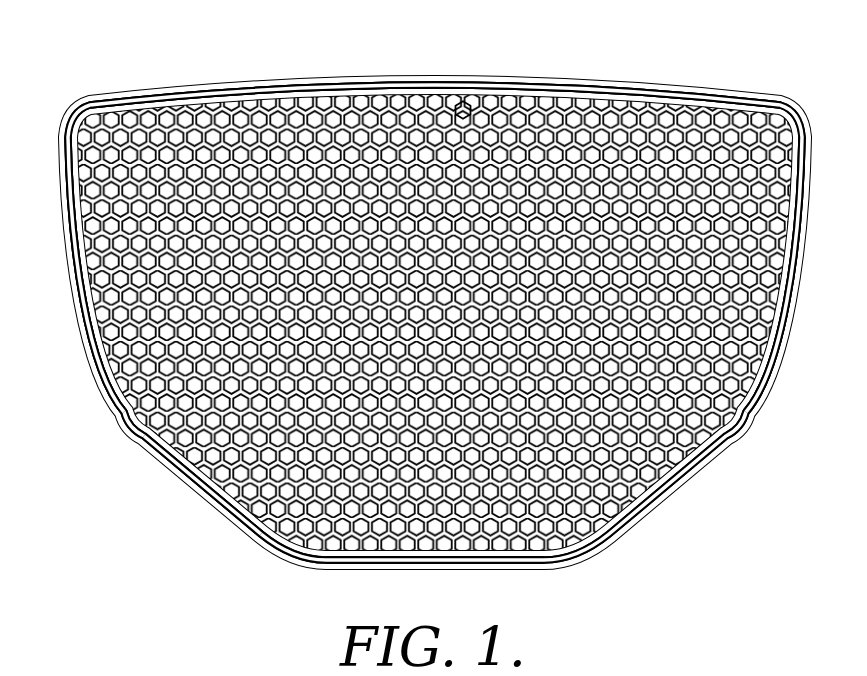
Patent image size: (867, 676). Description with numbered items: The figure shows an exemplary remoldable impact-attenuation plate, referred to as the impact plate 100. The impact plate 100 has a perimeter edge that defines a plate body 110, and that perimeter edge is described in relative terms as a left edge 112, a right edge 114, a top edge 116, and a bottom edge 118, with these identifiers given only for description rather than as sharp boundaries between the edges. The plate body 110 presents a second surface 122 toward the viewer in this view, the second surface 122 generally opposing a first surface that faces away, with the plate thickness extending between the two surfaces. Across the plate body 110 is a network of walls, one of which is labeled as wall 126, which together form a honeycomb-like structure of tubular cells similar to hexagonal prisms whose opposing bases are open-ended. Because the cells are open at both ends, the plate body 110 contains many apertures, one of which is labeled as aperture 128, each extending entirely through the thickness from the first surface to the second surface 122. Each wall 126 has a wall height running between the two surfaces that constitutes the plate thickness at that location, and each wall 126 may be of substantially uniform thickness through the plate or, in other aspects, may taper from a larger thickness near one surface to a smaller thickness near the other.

The impact plate 100 is at (606, 41).
The plate body 110 is at (334, 107).
The left edge 112 is at (86, 334).
The right edge 114 is at (793, 270).
The top edge 116 is at (246, 85).
The bottom edge 118 is at (431, 571).
The second surface 122 is at (410, 300).
The wall 126 is at (213, 500).
The aperture 128 is at (463, 103).